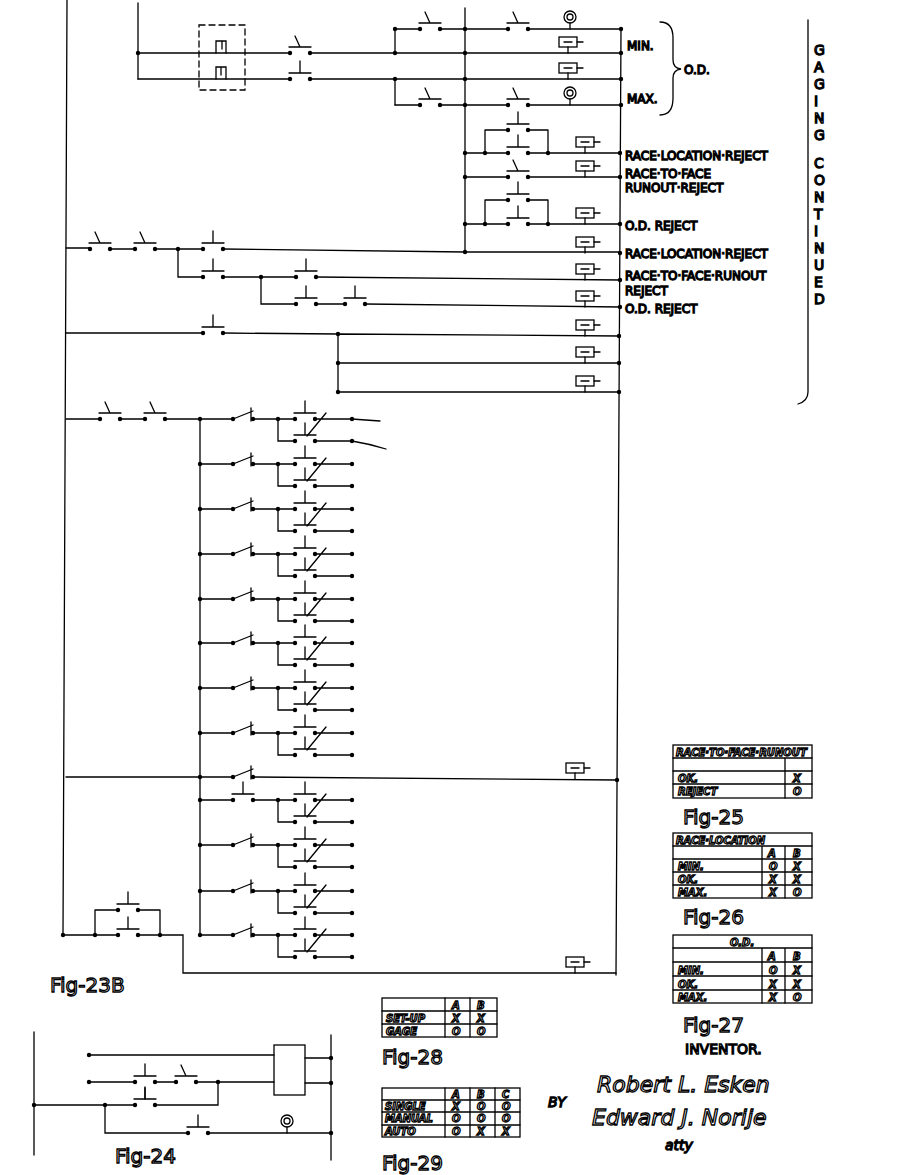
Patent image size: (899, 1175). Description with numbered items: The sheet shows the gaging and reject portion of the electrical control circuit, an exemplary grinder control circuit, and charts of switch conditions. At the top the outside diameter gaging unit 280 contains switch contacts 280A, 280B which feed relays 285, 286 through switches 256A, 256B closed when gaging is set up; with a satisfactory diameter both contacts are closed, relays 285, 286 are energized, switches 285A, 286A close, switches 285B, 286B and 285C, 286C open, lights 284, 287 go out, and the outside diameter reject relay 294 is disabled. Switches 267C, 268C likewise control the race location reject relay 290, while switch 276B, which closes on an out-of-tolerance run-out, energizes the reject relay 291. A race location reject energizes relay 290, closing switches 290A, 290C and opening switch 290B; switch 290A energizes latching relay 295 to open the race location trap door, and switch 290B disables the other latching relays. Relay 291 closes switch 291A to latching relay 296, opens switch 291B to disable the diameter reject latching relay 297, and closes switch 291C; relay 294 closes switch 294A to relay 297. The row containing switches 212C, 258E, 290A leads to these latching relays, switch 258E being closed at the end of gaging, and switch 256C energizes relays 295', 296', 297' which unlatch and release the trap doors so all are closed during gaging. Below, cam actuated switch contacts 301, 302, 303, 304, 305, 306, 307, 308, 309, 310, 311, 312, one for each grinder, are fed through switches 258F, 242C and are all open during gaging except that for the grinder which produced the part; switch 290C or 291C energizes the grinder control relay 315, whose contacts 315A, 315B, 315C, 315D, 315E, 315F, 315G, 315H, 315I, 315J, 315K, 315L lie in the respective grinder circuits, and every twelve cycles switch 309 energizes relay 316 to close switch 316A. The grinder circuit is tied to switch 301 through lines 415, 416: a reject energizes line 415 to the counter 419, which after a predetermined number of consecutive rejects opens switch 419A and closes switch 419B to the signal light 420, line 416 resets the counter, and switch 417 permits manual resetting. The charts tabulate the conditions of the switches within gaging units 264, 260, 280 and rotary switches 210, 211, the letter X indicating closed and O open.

In FIG. 23B, the outside diameter gaging unit 280 is at (196, 46).
In FIG. 27, the outside diameter gaging unit 280 is at (743, 956).
In FIG. 23B, the switch contact 280A is at (224, 40).
In FIG. 23B, the switch contact 280B is at (222, 82).
In FIG. 23B, the switch 256A is at (321, 41).
In FIG. 23B, the switch 256B is at (306, 83).
In FIG. 23B, the switch 285A is at (422, 24).
In FIG. 23B, the switch 285B is at (500, 17).
In FIG. 23B, the light 284 is at (577, 17).
In FIG. 23B, the relay 285 is at (559, 43).
In FIG. 23B, the relay 286 is at (559, 68).
In FIG. 23B, the switch 286A is at (428, 100).
In FIG. 23B, the switch 286B is at (499, 94).
In FIG. 23B, the light 287 is at (577, 93).
In FIG. 23B, the switch 267C is at (524, 123).
In FIG. 23B, the switch 268C is at (514, 146).
In FIG. 23B, the race location reject relay 290 is at (583, 137).
In FIG. 23B, the switch 276B is at (510, 175).
In FIG. 23B, the raceway-to-face run-out reject relay 291 is at (590, 172).
In FIG. 23B, the switch 285C is at (524, 193).
In FIG. 23B, the switch 286C is at (512, 228).
In FIG. 23B, the outside diameter reject relay 294 is at (600, 213).
In FIG. 23B, the latching relay 295 is at (556, 244).
In FIG. 23B, the latching relay 296 is at (557, 271).
In FIG. 23B, the diameter reject latching relay 297 is at (557, 298).
In FIG. 23B, the relay 295' is at (556, 326).
In FIG. 23B, the relay 296' is at (556, 353).
In FIG. 23B, the relay 297' is at (556, 382).
In FIG. 23B, the relay contact 212C is at (100, 230).
In FIG. 23B, the switch 258E is at (154, 230).
In FIG. 23B, the switch 290A is at (222, 240).
In FIG. 23B, the switch 290B is at (212, 282).
In FIG. 23B, the switch 291A is at (316, 270).
In FIG. 23B, the switch 294A is at (365, 297).
In FIG. 23B, the switch 256C is at (223, 326).
In FIG. 23B, the switch 291B is at (308, 308).
In FIG. 23B, the switch 258F is at (116, 406).
In FIG. 23B, the relay contact 242C is at (160, 408).
In FIG. 23B, the switch contact 301 is at (243, 414).
In FIG. 23B, the switch contact 302 is at (243, 462).
In FIG. 23B, the switch contact 303 is at (243, 507).
In FIG. 23B, the switch contact 304 is at (243, 552).
In FIG. 23B, the switch contact 305 is at (243, 597).
In FIG. 23B, the switch contact 306 is at (243, 641).
In FIG. 23B, the switch contact 307 is at (243, 686).
In FIG. 23B, the switch contact 308 is at (243, 731).
In FIG. 23B, the switch 309 is at (243, 775).
In FIG. 23B, the switch contact 310 is at (243, 843).
In FIG. 23B, the switch contact 311 is at (243, 889).
In FIG. 23B, the switch contact 312 is at (243, 933).
In FIG. 23B, the switch contacts 315A is at (320, 422).
In FIG. 23B, the switch contacts 315B is at (320, 467).
In FIG. 23B, the switch contacts 315C is at (320, 512).
In FIG. 23B, the switch contacts 315D is at (321, 557).
In FIG. 23B, the switch contacts 315E is at (320, 602).
In FIG. 23B, the switch contacts 315F is at (319, 646).
In FIG. 23B, the switch contacts 315G is at (321, 691).
In FIG. 23B, the switch contacts 315H is at (320, 736).
In FIG. 23B, the switch contacts 315I is at (317, 803).
In FIG. 23B, the switch contacts 315J is at (317, 848).
In FIG. 23B, the switch contacts 315K is at (320, 894).
In FIG. 23B, the switch contacts 315L is at (319, 938).
In FIG. 23B, the line 415 is at (382, 422).
In FIG. 24, the line 415 is at (89, 1055).
In FIG. 23B, the line 416 is at (384, 449).
In FIG. 24, the line 416 is at (89, 1082).
In FIG. 23B, the relay 316 is at (574, 763).
In FIG. 23B, the switch 316A is at (240, 794).
In FIG. 23B, the switch 290C is at (130, 903).
In FIG. 23B, the switch 291C is at (128, 943).
In FIG. 23B, the grinder control relay 315 is at (573, 956).
In FIG. 24, the switch 417 is at (144, 1064).
In FIG. 24, the switch 419A is at (188, 1070).
In FIG. 24, the counter 419 is at (289, 1053).
In FIG. 24, the switch 419B is at (207, 1124).
In FIG. 24, the signal light 420 is at (291, 1128).
In FIG. 25, the raceway-to-face run-out gaging switch 264 is at (798, 765).
In FIG. 26, the race location gaging unit 260 is at (743, 853).
In FIG. 28, the rotary switch 211 is at (405, 1005).
In FIG. 29, the rotary switch 210 is at (405, 1094).